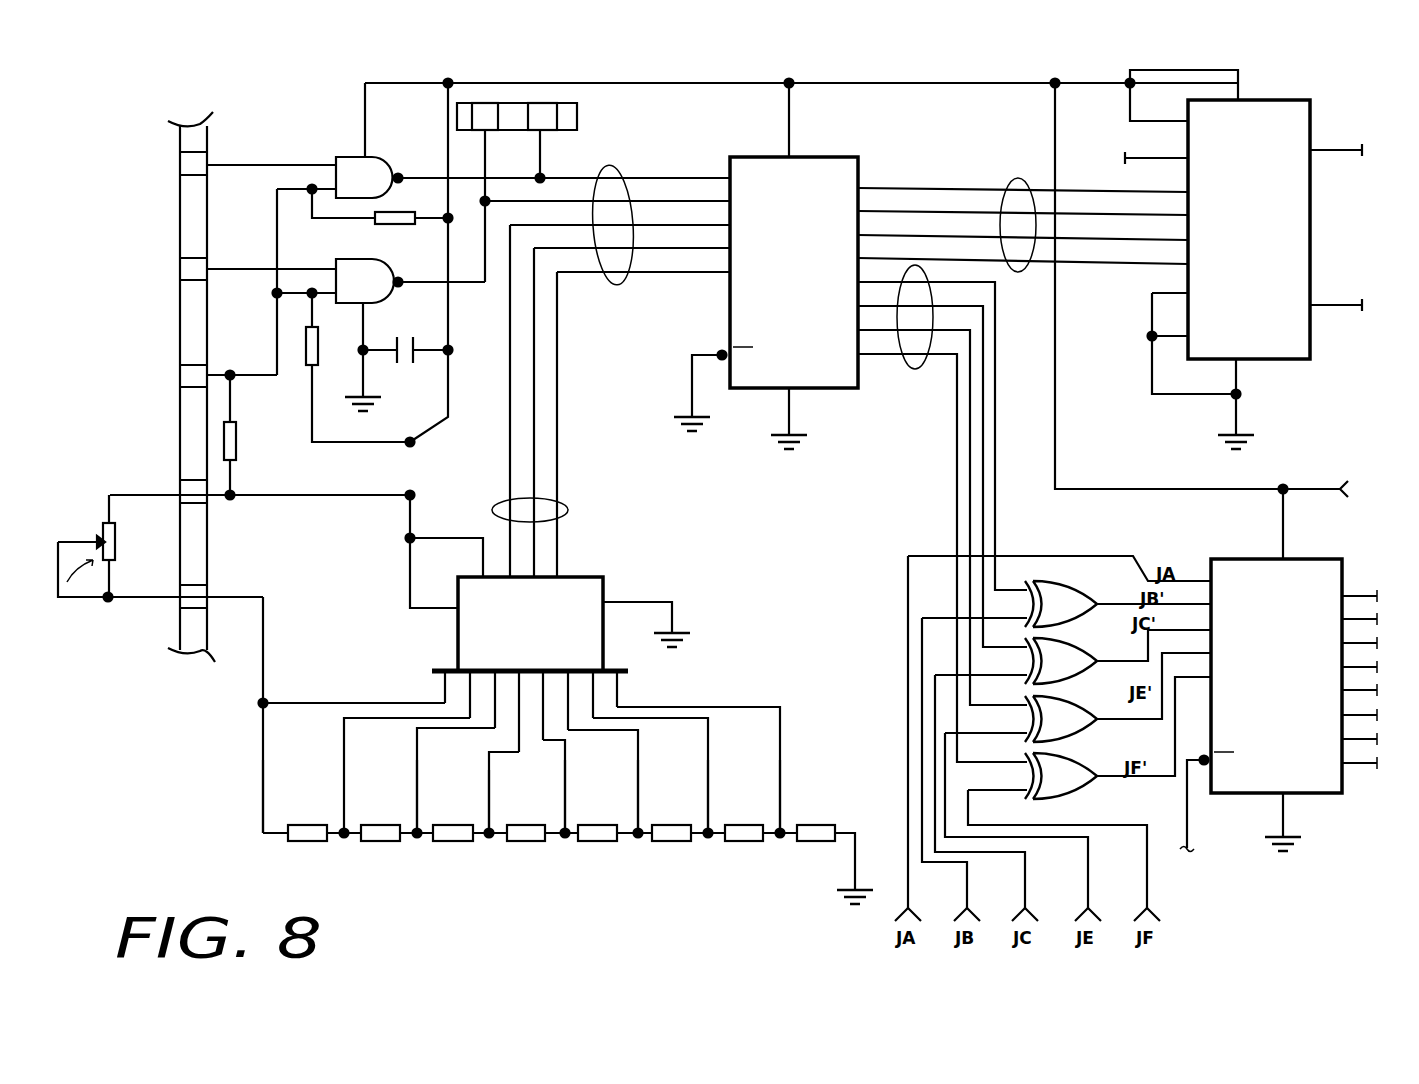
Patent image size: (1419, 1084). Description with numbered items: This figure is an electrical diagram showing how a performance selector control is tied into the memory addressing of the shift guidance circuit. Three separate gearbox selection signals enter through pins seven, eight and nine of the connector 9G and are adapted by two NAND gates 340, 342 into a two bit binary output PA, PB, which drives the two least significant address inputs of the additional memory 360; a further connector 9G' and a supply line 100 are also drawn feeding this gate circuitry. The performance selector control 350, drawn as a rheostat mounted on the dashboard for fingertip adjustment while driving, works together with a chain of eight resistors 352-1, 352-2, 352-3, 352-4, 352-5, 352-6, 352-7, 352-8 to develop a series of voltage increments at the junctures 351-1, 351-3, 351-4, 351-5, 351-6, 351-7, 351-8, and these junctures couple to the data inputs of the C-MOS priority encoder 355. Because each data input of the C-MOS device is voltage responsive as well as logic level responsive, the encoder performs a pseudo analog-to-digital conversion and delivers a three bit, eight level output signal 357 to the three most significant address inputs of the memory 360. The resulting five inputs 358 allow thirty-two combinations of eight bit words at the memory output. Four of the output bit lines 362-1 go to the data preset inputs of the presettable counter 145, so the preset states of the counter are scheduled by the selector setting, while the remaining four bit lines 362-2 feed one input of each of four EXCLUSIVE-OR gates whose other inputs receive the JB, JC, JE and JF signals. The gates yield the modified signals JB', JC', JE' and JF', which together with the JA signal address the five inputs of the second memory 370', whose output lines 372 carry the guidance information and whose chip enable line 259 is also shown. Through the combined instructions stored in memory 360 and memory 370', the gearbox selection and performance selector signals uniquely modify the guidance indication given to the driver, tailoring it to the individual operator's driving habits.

The connector 9G is at (166, 387).
The NAND gate 340 is at (351, 156).
The NAND gate 342 is at (357, 261).
The supply bus line 100 is at (322, 495).
The performance selector control 350 is at (60, 597).
The connector 9G' is at (547, 186).
The inputs 358 is at (625, 172).
The memory 360 is at (864, 161).
The bit lines 362-1 is at (1010, 180).
The bit lines 362-2 is at (913, 368).
The presettable counter 145 is at (1301, 110).
The priority encoder 355 is at (592, 582).
The output signal 357 is at (568, 510).
The juncture 351-1 is at (262, 822).
The juncture 351-3 is at (415, 822).
The juncture 351-4 is at (487, 822).
The juncture 351-5 is at (563, 822).
The juncture 351-6 is at (636, 822).
The juncture 351-7 is at (706, 822).
The juncture 351-8 is at (778, 822).
The resistor 352-1 is at (310, 842).
The resistor 352-2 is at (379, 842).
The resistor 352-3 is at (457, 842).
The resistor 352-4 is at (535, 842).
The resistor 352-5 is at (598, 842).
The resistor 352-6 is at (676, 842).
The resistor 352-7 is at (748, 842).
The resistor 352-8 is at (817, 842).
The memory 370' is at (1279, 689).
The ROM output lines 372 is at (1389, 593).
The chip enable line 259 is at (1200, 821).